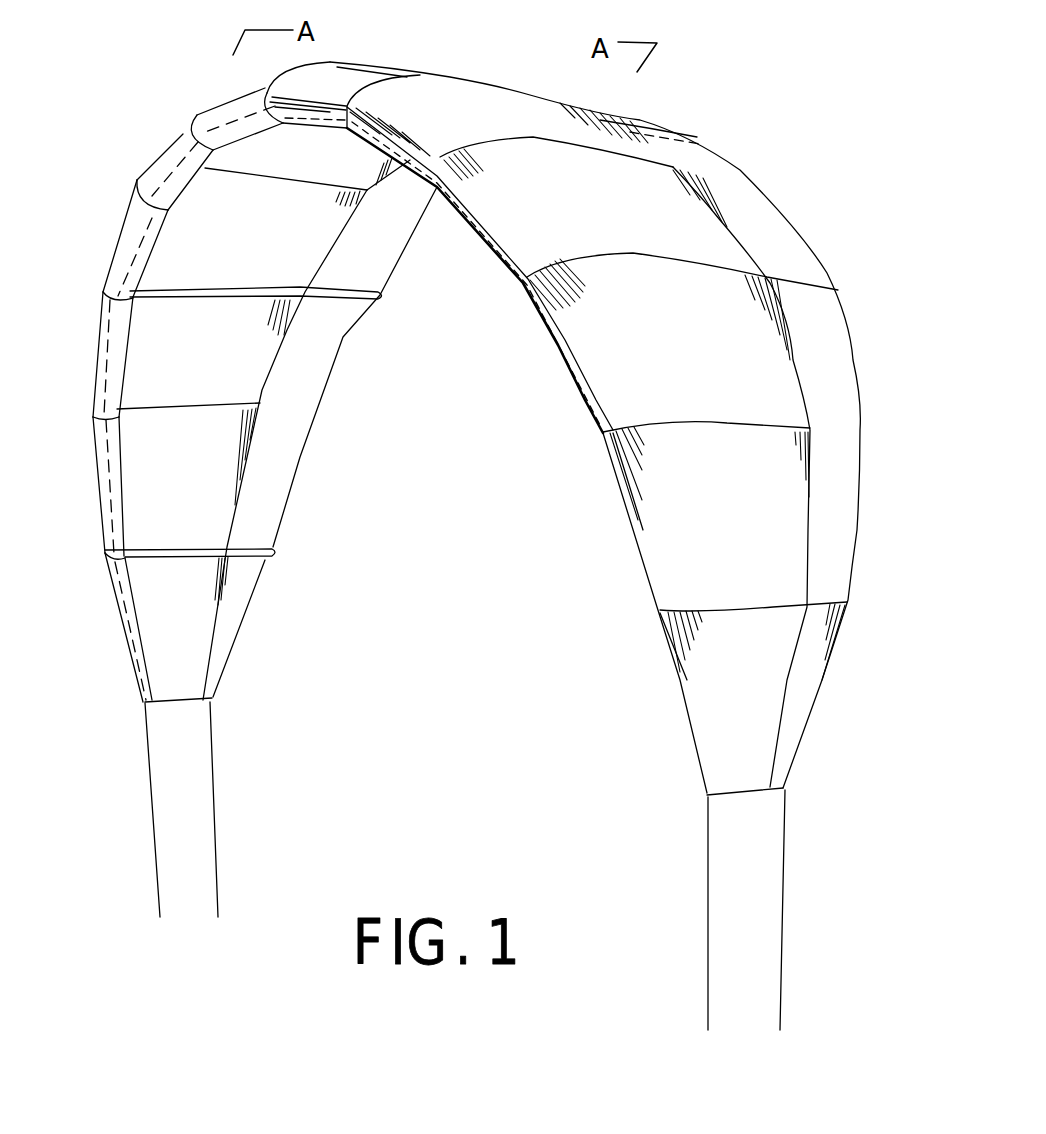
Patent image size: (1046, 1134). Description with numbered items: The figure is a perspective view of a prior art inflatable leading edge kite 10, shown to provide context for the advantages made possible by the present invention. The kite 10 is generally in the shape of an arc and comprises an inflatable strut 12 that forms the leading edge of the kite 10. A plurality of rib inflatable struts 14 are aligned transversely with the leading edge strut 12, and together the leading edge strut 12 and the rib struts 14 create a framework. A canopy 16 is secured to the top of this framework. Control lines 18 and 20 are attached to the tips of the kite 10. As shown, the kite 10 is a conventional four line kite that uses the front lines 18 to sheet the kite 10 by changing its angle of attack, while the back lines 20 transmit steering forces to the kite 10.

The inflatable leading edge kite 10 is at (141, 120).
The inflatable strut 12 is at (118, 228).
The rib inflatable struts 14 is at (273, 296).
The canopy 16 is at (497, 102).
The front lines 18 is at (150, 838).
The back lines 20 is at (215, 836).